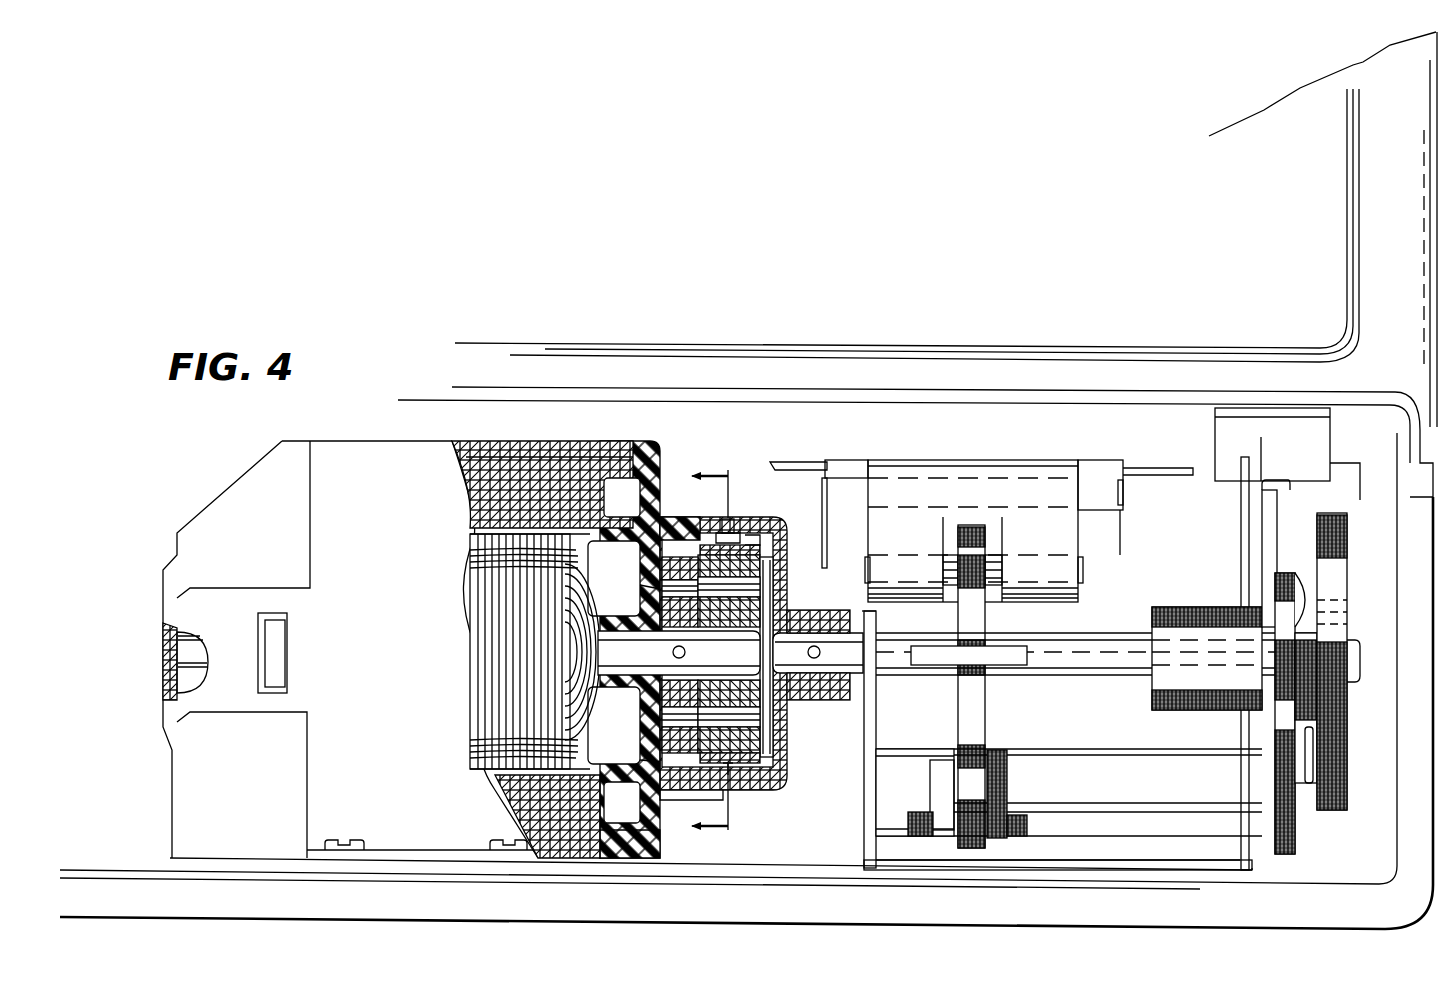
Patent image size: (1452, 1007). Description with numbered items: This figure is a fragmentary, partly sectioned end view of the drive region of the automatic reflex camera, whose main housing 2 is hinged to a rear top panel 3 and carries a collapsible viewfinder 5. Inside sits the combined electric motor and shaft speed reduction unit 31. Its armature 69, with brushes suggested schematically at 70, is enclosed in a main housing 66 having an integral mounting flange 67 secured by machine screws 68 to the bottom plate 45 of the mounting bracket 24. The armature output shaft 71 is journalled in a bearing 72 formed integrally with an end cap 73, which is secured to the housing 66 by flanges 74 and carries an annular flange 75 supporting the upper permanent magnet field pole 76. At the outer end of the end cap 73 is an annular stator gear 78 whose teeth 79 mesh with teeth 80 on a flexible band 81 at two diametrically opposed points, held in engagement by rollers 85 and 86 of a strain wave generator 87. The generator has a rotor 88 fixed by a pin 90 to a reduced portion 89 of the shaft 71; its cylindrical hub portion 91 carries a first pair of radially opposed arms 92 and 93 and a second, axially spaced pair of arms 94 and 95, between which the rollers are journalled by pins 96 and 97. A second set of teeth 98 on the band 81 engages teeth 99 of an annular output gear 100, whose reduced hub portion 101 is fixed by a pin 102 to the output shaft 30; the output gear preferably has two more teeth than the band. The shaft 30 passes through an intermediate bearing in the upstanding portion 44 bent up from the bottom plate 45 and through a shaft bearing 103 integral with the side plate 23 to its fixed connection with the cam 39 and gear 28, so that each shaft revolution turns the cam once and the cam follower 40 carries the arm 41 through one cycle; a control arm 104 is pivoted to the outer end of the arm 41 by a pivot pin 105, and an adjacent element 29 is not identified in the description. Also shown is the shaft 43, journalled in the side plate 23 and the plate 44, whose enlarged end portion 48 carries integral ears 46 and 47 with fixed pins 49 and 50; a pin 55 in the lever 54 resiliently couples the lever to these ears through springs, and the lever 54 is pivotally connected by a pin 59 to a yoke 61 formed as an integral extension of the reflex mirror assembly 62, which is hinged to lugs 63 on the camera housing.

The main housing 2 is at (1416, 902).
The rear top panel 3 is at (1256, 112).
The collapsible viewfinder 5 is at (701, 643).
The side plate 23 is at (1241, 553).
The mounting bracket 24 is at (1264, 860).
The gear 28 is at (1318, 614).
The gear 29 is at (1336, 520).
The output shaft 30 is at (1090, 674).
The combined electric motor and shaft speed reduction unit 31 is at (668, 446).
The cam 39 is at (1312, 655).
The cam follower 40 is at (1309, 785).
The arm 41 is at (1280, 710).
The shaft 43 is at (1094, 774).
The upstanding portion 44 is at (878, 728).
The bottom plate 45 is at (806, 866).
The ear 46 is at (937, 763).
The ear 47 is at (1010, 762).
The enlarged end portion 48 is at (918, 750).
The pin 49 is at (921, 838).
The pin 50 is at (1018, 838).
The lever 54 is at (975, 717).
The pin 55 is at (1000, 646).
The pin 59 is at (1125, 492).
The yoke 61 is at (885, 535).
The reflex mirror assembly 62 is at (1000, 563).
The lugs 63 is at (852, 464).
The main housing 66 is at (378, 465).
The mounting flange 67 is at (421, 848).
The machine screws 68 is at (340, 840).
The armature 69 is at (516, 633).
The brushes 70 is at (292, 656).
The output shaft 71 is at (558, 860).
The bearing 72 is at (614, 725).
The end cap 73 is at (664, 846).
The flanges 74 is at (645, 447).
The annular flange 75 is at (622, 497).
The upper permanent magnet field pole 76 is at (558, 447).
The annular stator gear 78 is at (705, 526).
The teeth 79 is at (690, 518).
The teeth 80 is at (740, 520).
The flexible band 81 is at (778, 780).
The roller 85 is at (766, 548).
The roller 86 is at (766, 751).
The strain wave generator 87 is at (622, 802).
The rotor 88 is at (614, 578).
The reduced portion 89 is at (790, 700).
The pin 90 is at (679, 653).
The cylindrical hub portion 91 is at (762, 602).
The arm 92 is at (640, 586).
The arm 93 is at (640, 760).
The arm 94 is at (760, 566).
The arm 95 is at (764, 760).
The pin 96 is at (768, 582).
The pin 97 is at (770, 735).
The teeth 98 is at (755, 540).
The teeth 99 is at (752, 778).
The annular output gear 100 is at (765, 542).
The reduced hub portion 101 is at (870, 620).
The pin 102 is at (818, 653).
The shaft bearing 103 is at (1172, 608).
The control arm 104 is at (1269, 564).
The pivot pin 105 is at (1308, 590).